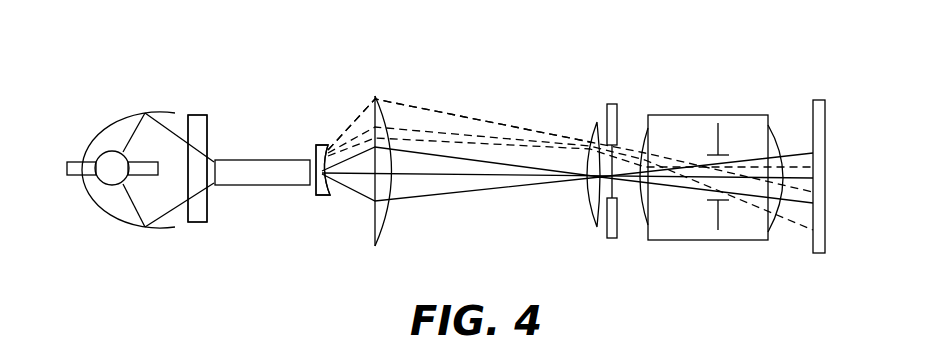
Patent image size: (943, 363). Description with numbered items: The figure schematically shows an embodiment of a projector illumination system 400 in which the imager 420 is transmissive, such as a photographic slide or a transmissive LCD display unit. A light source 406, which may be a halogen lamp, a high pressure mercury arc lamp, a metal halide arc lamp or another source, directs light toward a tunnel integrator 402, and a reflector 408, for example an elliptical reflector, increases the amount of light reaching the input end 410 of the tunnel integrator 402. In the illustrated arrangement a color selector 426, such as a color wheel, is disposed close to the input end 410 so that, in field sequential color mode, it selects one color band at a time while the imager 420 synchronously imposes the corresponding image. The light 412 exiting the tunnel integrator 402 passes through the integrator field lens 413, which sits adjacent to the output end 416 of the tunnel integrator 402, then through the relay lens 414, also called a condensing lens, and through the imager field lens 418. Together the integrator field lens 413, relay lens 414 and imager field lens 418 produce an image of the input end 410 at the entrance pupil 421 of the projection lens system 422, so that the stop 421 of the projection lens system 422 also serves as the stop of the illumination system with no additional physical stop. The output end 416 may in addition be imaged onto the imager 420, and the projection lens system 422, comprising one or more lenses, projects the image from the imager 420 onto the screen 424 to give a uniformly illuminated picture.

The projector illumination system 400 is at (773, 72).
The tunnel integrator 402 is at (261, 186).
The light source 406 is at (72, 176).
The reflector 408 is at (172, 231).
The input end of the tunnel integrator 410 is at (212, 160).
The light exiting from the tunnel integrator 412 is at (356, 114).
The integrator field lens 413 is at (322, 196).
The relay lens 414 is at (375, 247).
The output end of the tunnel integrator 416 is at (315, 152).
The imager field lens 418 is at (594, 228).
The imager 420 is at (612, 103).
The entrance pupil 421 is at (719, 122).
The projection lens system 422 is at (710, 241).
The screen 424 is at (818, 254).
The color selector 426 is at (195, 223).